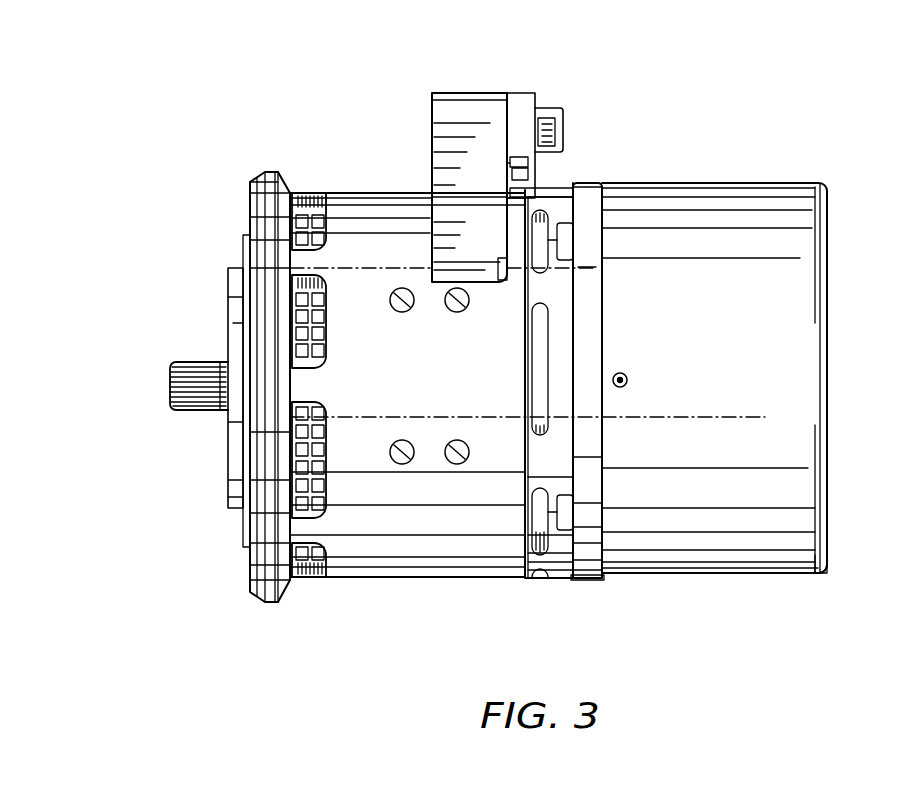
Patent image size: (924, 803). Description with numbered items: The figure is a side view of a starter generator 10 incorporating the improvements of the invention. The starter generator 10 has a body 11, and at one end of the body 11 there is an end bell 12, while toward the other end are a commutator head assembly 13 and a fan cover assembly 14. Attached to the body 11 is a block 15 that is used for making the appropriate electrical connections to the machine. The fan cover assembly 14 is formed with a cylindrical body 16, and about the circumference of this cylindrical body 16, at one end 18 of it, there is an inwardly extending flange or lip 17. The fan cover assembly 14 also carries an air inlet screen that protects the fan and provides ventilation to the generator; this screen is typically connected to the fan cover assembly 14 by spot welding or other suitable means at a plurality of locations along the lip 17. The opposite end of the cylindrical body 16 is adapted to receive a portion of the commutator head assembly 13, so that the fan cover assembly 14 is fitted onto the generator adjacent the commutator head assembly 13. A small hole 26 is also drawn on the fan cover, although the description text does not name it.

The mounting plate 10 is at (583, 580).
The motor body 11 is at (398, 578).
The mounting flange 12 is at (263, 172).
The ring 13 is at (560, 188).
The housing 14 is at (754, 391).
The terminal bracket 15 is at (493, 78).
The housing lower portion 16 is at (702, 580).
The housing rim 17 is at (827, 564).
The end plate 18 is at (828, 576).
The hole 26 is at (628, 377).